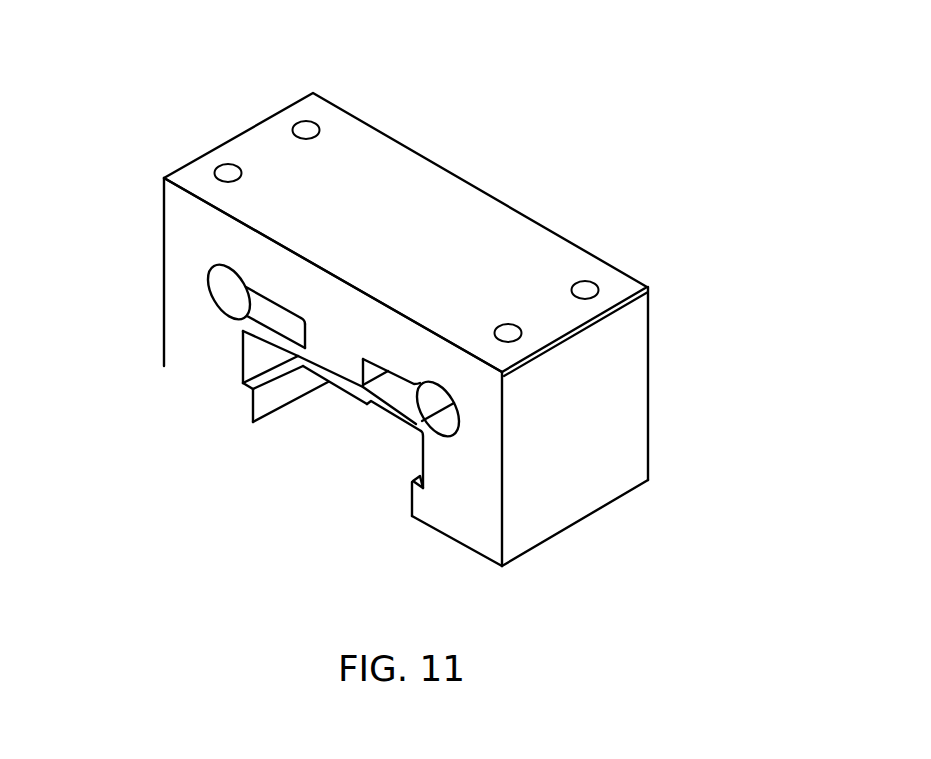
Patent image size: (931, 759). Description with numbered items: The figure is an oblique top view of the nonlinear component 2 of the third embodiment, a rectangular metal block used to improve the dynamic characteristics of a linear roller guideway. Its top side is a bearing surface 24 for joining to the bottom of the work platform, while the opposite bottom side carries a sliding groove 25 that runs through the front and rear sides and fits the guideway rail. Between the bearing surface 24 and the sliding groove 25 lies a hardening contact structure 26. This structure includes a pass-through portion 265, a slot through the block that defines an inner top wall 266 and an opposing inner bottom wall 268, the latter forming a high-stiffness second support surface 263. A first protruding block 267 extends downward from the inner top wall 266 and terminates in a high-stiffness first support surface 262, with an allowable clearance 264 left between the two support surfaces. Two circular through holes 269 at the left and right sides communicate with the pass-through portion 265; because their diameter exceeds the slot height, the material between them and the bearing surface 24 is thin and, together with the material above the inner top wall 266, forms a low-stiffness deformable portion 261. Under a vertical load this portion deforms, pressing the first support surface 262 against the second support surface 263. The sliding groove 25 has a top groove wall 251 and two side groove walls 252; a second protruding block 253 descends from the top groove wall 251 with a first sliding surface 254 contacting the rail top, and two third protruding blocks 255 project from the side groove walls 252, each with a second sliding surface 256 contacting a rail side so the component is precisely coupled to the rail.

The nonlinear component 2 is at (658, 403).
The bearing surface 24 is at (655, 227).
The sliding groove 25 is at (322, 447).
The hardening contact structure 26 is at (552, 262).
The top groove wall 251 is at (285, 362).
The side groove walls 252 is at (425, 455).
The second protruding block 253 is at (378, 405).
The first sliding surface 254 is at (348, 395).
The third protruding blocks 255 is at (250, 403).
The second sliding surface 256 is at (253, 423).
The low-stiffness deformable portion 261 is at (402, 344).
The high-stiffness first support surface 262 is at (352, 370).
The high-stiffness second support surface 263 is at (278, 330).
The allowable clearance 264 is at (338, 370).
The pass-through portion 265 is at (287, 307).
The inner top wall 266 is at (250, 292).
The first protruding block 267 is at (325, 340).
The inner bottom wall 268 is at (244, 386).
The through holes 269 is at (214, 275).